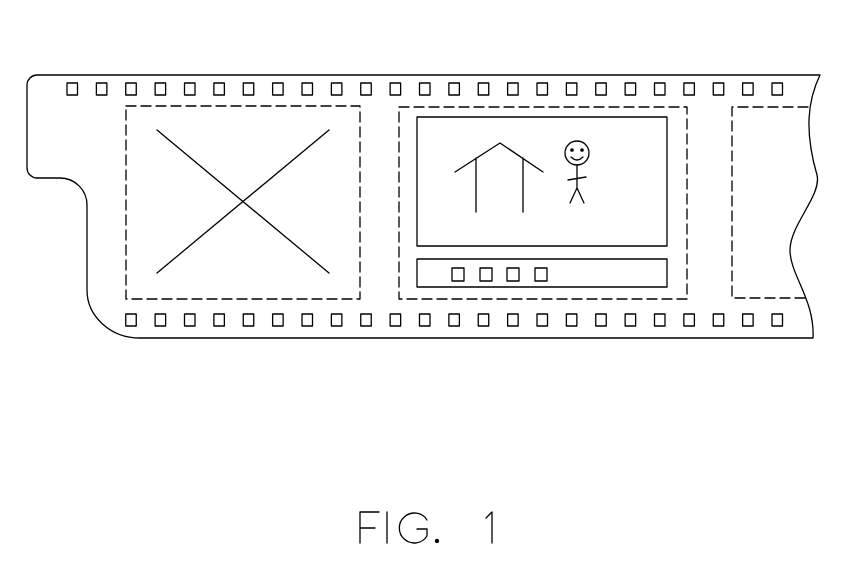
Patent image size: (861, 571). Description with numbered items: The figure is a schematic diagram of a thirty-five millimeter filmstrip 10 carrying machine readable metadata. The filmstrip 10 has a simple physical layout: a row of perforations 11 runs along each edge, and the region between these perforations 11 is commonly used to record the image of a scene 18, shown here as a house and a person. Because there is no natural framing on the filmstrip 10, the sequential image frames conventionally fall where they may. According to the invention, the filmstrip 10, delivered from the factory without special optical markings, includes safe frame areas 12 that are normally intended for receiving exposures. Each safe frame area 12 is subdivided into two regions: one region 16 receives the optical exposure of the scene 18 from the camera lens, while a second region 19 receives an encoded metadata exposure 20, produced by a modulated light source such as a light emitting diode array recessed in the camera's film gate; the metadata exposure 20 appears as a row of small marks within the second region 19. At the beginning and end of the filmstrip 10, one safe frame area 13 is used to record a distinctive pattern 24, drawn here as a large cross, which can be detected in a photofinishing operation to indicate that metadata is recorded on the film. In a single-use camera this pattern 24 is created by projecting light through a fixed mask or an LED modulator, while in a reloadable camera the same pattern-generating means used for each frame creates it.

The filmstrip 10 is at (97, 317).
The perforations 11 is at (308, 80).
The safe frame area 12 is at (585, 107).
The safe frame area 13 is at (170, 106).
The region 16 is at (490, 117).
The scene 18 is at (588, 155).
The second region 19 is at (610, 287).
The encoded metadata exposure 20 is at (460, 287).
The distinctive pattern 24 is at (205, 233).